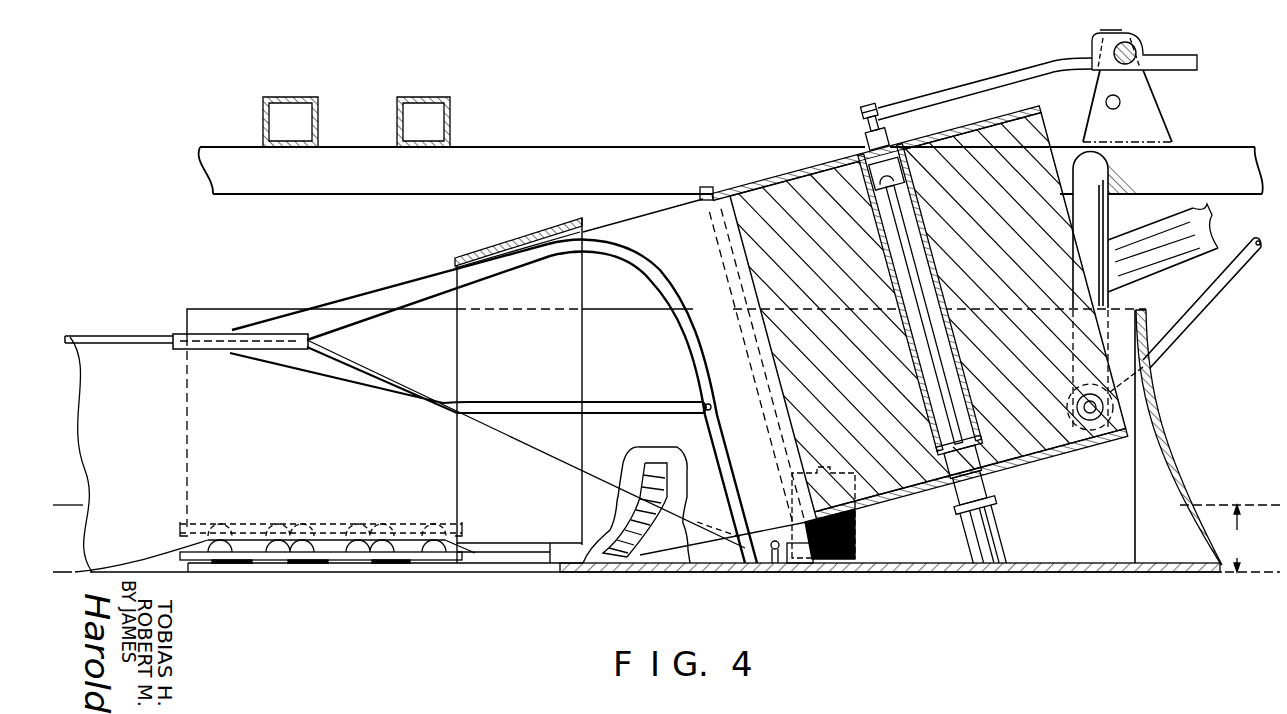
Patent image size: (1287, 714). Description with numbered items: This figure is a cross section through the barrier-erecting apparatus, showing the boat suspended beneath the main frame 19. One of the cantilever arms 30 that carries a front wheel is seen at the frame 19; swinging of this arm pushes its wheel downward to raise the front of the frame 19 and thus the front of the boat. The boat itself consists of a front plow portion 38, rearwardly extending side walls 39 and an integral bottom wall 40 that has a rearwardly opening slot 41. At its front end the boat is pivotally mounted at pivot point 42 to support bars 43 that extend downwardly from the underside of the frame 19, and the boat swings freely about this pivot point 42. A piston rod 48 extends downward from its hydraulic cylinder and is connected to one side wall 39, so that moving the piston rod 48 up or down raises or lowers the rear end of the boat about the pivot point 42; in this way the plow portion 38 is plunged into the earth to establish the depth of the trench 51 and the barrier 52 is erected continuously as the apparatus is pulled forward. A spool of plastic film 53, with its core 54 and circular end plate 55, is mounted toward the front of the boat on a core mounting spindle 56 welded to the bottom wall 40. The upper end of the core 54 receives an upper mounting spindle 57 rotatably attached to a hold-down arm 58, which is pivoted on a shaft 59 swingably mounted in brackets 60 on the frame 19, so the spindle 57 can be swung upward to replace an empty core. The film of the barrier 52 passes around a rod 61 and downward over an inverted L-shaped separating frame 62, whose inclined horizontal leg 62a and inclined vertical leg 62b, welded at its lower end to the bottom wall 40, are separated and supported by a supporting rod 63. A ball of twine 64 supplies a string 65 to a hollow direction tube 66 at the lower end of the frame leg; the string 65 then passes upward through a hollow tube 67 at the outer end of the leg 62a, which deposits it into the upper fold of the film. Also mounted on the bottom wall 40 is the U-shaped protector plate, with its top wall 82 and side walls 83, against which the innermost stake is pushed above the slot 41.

The main frame 19 is at (1203, 160).
The cantilever arm 30 is at (1197, 235).
The front plow portion 38 is at (1160, 485).
The side walls 39 is at (637, 558).
The bottom wall 40 is at (934, 569).
The rearwardly opening slot 41 is at (514, 566).
The pivot point 42 is at (1103, 430).
The support bars 43 is at (1110, 220).
The piston rod 48 is at (1214, 290).
The trench 51 is at (1230, 538).
The barrier 52 is at (653, 220).
The spool of plastic film 53 is at (1013, 158).
The core 54 is at (905, 150).
The circular end plate 55 is at (972, 128).
The core mounting spindle 56 is at (963, 477).
The upper mounting spindle 57 is at (862, 138).
The hold-down arm 58 is at (913, 97).
The shaft 59 is at (1136, 62).
The brackets 60 is at (1153, 122).
The rod 61 is at (712, 186).
The inverted L-shaped separating frame 62 is at (655, 275).
The inclined horizontal leg 62a is at (440, 264).
The inclined vertical leg 62b is at (452, 377).
The supporting rod 63 is at (596, 402).
The ball of twine 64 is at (856, 553).
The string 65 is at (154, 343).
The hollow direction tube 66 is at (736, 563).
The hollow tube 67 is at (308, 340).
The top wall 82 is at (556, 222).
The side walls 83 is at (553, 297).